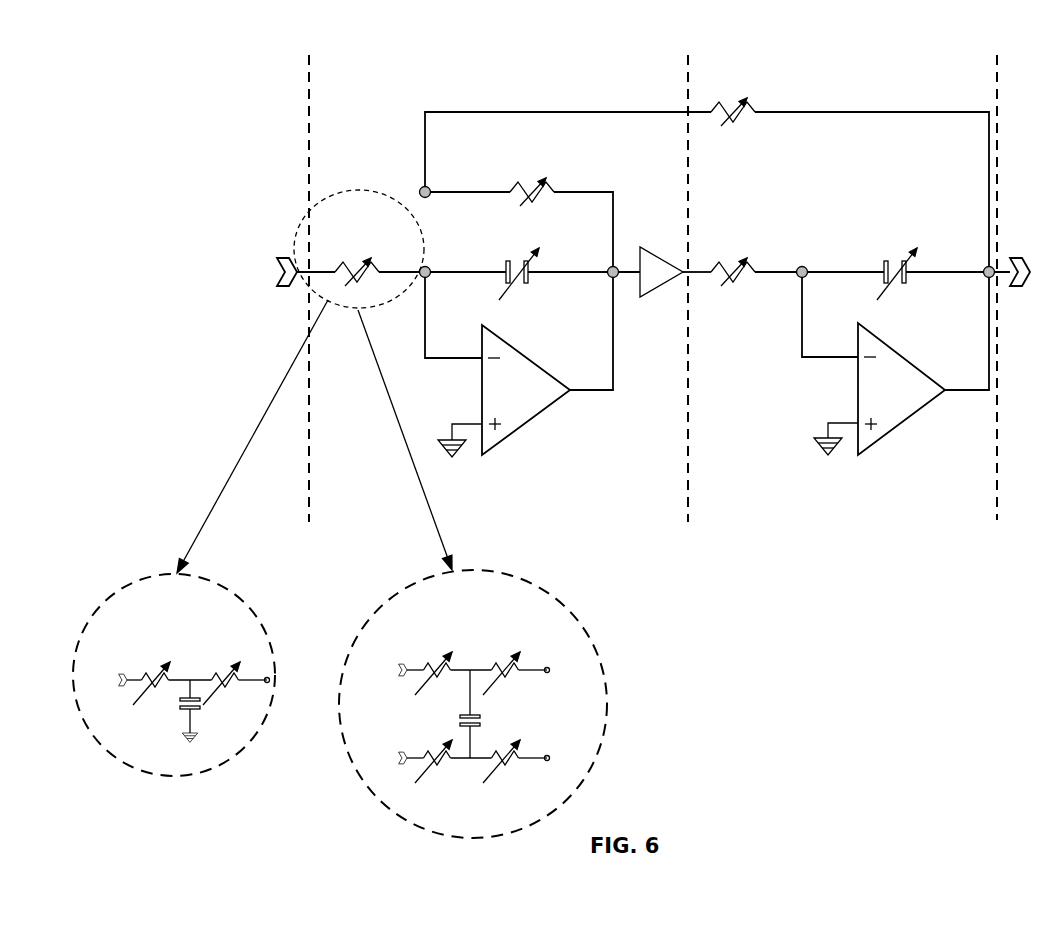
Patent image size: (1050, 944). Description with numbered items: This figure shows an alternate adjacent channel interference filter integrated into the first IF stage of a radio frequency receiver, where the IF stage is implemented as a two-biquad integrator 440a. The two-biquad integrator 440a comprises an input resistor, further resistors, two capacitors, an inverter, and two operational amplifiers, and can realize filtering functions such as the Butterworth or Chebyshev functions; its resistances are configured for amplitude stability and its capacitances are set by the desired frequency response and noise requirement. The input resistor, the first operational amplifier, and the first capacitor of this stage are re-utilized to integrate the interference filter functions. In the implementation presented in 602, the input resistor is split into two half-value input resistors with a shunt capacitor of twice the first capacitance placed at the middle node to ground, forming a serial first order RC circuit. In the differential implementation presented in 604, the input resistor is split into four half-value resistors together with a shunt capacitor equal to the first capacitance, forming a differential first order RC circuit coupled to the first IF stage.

The 2-biquad integrator 440a is at (821, 58).
The serial first order RC circuit implementation 602 is at (240, 588).
The differential first order RC circuit implementation 604 is at (565, 605).